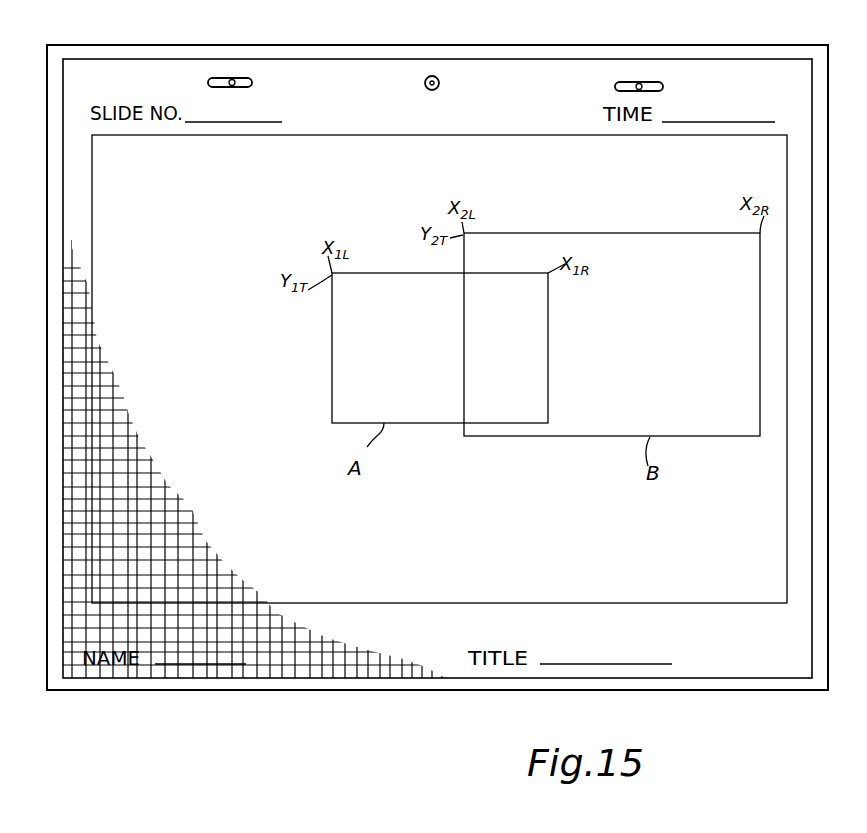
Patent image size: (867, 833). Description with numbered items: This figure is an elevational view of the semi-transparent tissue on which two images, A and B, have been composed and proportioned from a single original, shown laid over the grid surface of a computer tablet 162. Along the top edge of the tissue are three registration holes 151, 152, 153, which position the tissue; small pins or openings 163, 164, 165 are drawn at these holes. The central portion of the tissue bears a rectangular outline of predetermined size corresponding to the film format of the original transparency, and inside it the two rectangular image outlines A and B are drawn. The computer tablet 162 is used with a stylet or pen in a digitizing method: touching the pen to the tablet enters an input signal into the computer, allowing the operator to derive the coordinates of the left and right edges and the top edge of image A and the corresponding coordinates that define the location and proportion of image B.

The registration hole 151 is at (245, 80).
The registration hole 152 is at (438, 78).
The registration hole 153 is at (665, 83).
The computer tablet 162 is at (47, 335).
The left registration pin hole 163 is at (233, 79).
The center registration pin hole 164 is at (431, 76).
The right registration pin hole 165 is at (641, 83).